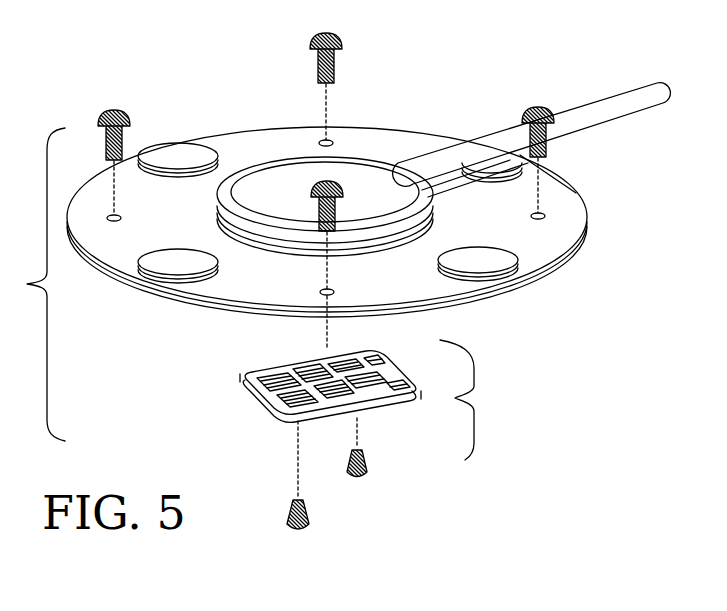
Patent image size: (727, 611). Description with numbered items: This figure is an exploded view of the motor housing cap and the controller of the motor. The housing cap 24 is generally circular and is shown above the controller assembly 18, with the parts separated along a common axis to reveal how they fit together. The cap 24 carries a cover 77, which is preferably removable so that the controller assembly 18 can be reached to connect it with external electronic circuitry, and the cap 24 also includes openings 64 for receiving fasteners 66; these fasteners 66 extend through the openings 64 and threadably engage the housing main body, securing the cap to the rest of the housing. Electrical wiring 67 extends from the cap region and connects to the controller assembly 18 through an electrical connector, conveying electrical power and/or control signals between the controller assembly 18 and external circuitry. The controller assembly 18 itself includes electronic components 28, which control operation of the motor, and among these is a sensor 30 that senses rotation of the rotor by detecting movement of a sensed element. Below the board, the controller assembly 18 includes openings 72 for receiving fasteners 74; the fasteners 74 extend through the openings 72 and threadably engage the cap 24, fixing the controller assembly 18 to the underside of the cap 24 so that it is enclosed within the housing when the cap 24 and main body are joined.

The controller assembly 18 is at (484, 400).
The housing cap 24 is at (231, 103).
The electronic components 28 is at (312, 378).
The sensor 30 is at (280, 363).
The openings 64 is at (543, 216).
The fasteners 66 is at (113, 100).
The electrical wiring 67 is at (588, 103).
The openings 72 is at (297, 421).
The fasteners 74 is at (367, 466).
The cover 77 is at (366, 190).